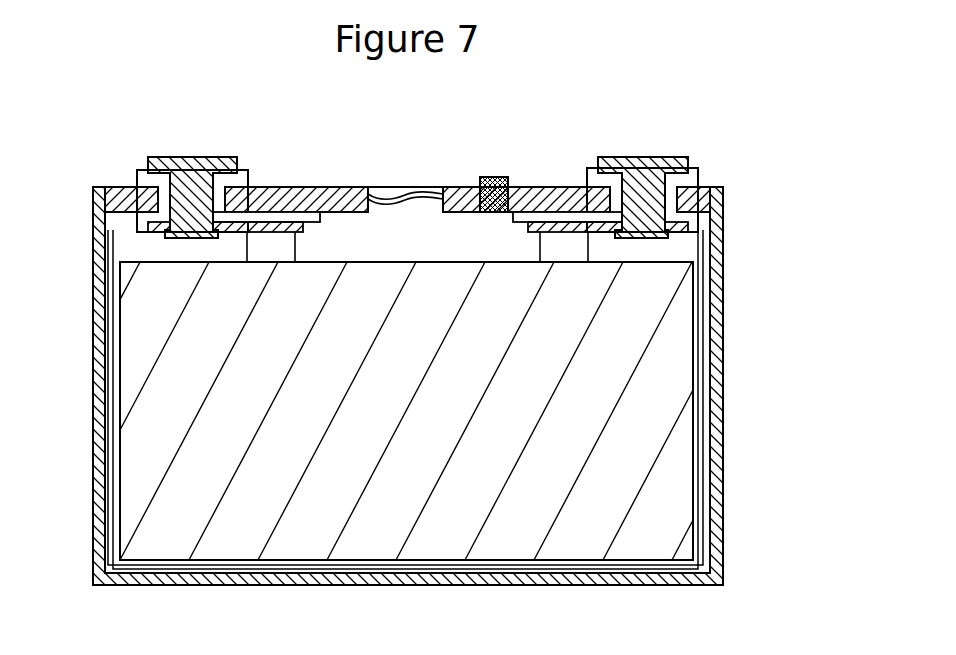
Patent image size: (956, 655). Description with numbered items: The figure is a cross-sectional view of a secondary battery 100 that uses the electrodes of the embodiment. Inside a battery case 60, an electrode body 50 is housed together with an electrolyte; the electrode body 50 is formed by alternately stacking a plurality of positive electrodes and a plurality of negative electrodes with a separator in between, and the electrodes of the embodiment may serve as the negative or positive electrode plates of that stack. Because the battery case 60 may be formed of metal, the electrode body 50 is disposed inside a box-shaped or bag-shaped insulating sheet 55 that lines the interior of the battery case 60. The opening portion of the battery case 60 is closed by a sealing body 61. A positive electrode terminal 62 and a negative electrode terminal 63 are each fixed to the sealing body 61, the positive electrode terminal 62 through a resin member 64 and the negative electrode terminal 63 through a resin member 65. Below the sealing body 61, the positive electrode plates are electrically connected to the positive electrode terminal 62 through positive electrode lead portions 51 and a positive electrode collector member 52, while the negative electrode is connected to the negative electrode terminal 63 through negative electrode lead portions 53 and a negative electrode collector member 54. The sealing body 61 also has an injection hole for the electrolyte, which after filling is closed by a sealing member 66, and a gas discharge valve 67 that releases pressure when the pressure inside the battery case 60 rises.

The secondary battery 100 is at (718, 103).
The battery case 60 is at (93, 329).
The insulating sheet 55 is at (704, 434).
The electrode body 50 is at (512, 533).
The sealing body 61 is at (343, 187).
The gas discharge valve 67 is at (406, 194).
The sealing member 66 is at (490, 177).
The negative electrode terminal 63 is at (183, 157).
The positive electrode terminal 62 is at (640, 157).
The resin member 65 is at (244, 170).
The resin member 64 is at (591, 169).
The negative electrode collector member 54 is at (272, 216).
The negative electrode lead portions 53 is at (307, 227).
The positive electrode lead portions 51 is at (531, 216).
The positive electrode collector member 52 is at (565, 227).